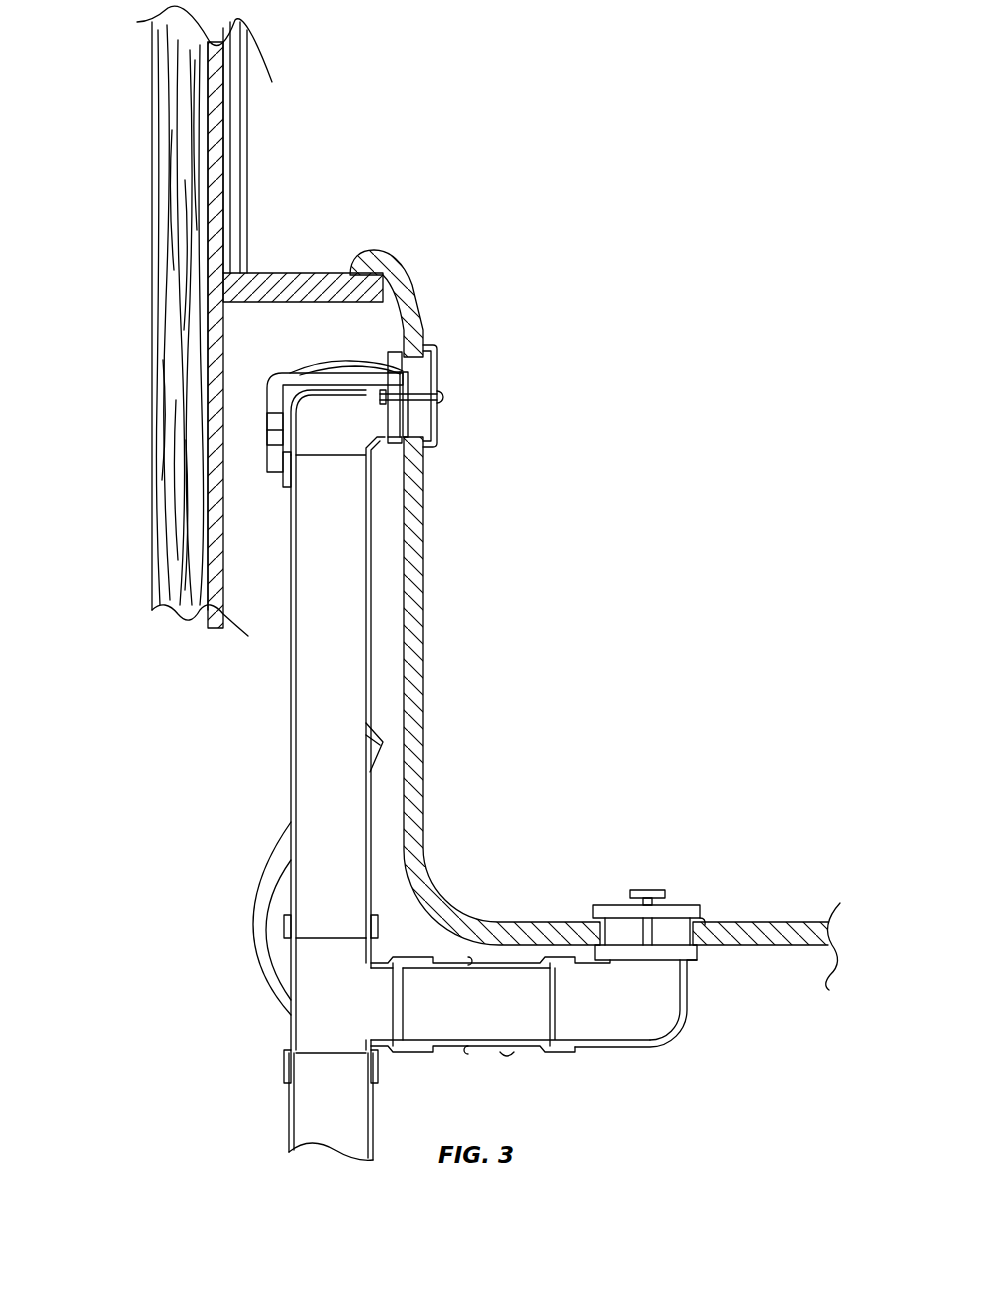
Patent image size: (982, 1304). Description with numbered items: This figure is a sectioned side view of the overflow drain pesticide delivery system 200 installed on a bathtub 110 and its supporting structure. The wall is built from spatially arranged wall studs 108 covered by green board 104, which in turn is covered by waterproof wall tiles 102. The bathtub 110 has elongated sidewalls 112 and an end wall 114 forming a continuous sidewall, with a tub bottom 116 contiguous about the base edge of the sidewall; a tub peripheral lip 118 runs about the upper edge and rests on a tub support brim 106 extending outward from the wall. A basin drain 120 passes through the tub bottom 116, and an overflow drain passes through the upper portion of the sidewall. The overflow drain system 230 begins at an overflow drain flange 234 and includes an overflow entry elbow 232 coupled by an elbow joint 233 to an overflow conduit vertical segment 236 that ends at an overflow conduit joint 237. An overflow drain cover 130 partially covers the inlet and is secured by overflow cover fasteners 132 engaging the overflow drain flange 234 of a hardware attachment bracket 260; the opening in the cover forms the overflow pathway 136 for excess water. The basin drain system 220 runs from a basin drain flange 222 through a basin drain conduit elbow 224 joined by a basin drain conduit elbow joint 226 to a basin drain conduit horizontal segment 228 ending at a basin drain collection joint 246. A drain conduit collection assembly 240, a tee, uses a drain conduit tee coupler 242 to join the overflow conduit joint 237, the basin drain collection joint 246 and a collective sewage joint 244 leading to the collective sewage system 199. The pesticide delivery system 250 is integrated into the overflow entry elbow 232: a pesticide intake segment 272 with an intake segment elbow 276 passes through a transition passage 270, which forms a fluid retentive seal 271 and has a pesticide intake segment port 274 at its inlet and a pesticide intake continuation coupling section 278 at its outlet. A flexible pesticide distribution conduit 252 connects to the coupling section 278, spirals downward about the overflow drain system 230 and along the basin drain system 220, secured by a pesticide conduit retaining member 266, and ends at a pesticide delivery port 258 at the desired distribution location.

The wall tiles 102 is at (247, 165).
The green board 104 is at (223, 145).
The tub support brim 106 is at (300, 273).
The wall studs 108 is at (152, 205).
The bathtub 110 is at (597, 586).
The elongated sidewalls 112 is at (668, 506).
The end wall 114 is at (423, 665).
The tub bottom 116 is at (783, 922).
The tub peripheral lip 118 is at (378, 252).
The basin drain 120 is at (682, 905).
The overflow drain cover 130 is at (438, 362).
The overflow cover fasteners 132 is at (443, 398).
The overflow pathway 136 is at (430, 450).
The collective sewage system 199 is at (289, 1110).
The overflow drain pesticide delivery system 200 is at (419, 729).
The basin drain system 220 is at (576, 1060).
The basin drain flange 222 is at (702, 918).
The basin drain conduit elbow 224 is at (682, 1020).
The basin drain conduit elbow joint 226 is at (588, 1050).
The basin drain conduit horizontal segment 228 is at (503, 963).
The overflow drain system 230 is at (323, 667).
The overflow entry elbow 232 is at (347, 369).
The elbow joint 233 is at (291, 468).
The overflow drain flange 234 is at (400, 350).
The overflow conduit vertical segment 236 is at (290, 666).
The overflow conduit joint 237 is at (285, 930).
The drain conduit collection assembly 240 is at (367, 1033).
The drain conduit tee coupler 242 is at (284, 1020).
The collective sewage joint 244 is at (284, 1062).
The basin drain collection joint 246 is at (415, 1053).
The pesticide delivery system 250 is at (170, 895).
The pesticide distribution conduit 252 is at (258, 892).
The pesticide delivery port 258 is at (508, 1056).
The hardware attachment bracket 260 is at (412, 397).
The pesticide conduit retaining member 266 is at (490, 1052).
The transition passage 270 is at (305, 373).
The fluid retentive seal 271 is at (266, 390).
The pesticide intake segment 272 is at (362, 388).
The pesticide intake segment port 274 is at (410, 384).
The intake segment elbow 276 is at (267, 430).
The pesticide intake continuation coupling section 278 is at (267, 432).